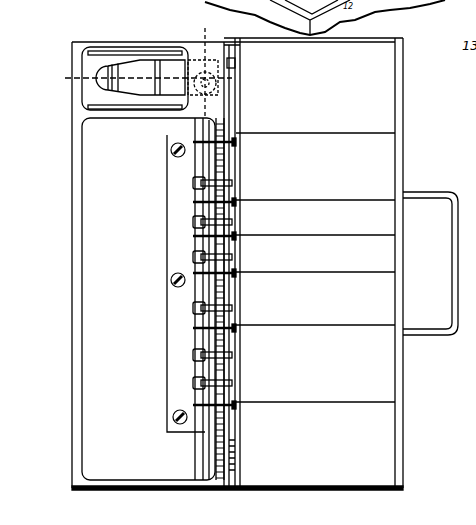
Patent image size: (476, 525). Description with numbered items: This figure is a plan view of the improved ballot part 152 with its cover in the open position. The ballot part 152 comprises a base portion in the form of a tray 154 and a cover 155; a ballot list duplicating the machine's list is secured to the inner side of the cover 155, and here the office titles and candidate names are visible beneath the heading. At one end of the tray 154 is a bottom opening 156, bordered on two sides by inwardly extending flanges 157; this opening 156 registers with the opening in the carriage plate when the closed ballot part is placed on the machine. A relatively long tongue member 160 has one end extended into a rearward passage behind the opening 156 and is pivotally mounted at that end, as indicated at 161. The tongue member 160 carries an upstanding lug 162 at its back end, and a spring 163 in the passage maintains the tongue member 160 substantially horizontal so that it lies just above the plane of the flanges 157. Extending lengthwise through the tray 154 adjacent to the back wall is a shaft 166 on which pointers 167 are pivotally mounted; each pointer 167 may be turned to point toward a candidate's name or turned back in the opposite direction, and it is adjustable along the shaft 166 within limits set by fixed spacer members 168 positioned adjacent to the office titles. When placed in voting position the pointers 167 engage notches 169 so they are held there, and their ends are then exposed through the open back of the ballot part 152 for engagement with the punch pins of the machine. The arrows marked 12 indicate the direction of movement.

The direction arrow 12 is at (67, 86).
The ballot part 152 is at (414, 377).
The tray 154 is at (438, 263).
The cover 155 is at (382, 88).
The bottom opening 156 is at (78, 42).
The inwardly extending flanges 157 is at (125, 52).
The tongue member 160 is at (128, 88).
The pivot 161 is at (206, 66).
The upstanding lug 162 is at (190, 47).
The spring 163 is at (190, 101).
The shaft 166 is at (397, 138).
The pointers 167 is at (193, 222).
The fixed spacer members 168 is at (193, 273).
The notches 169 is at (222, 372).